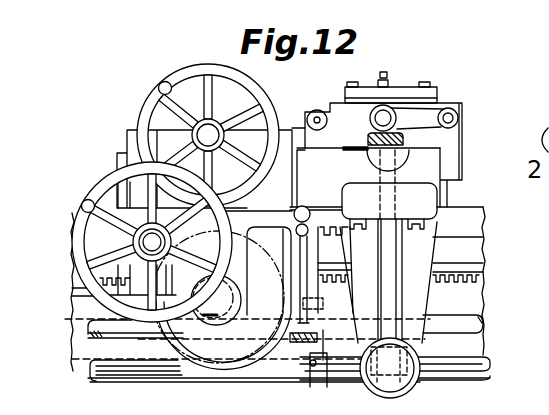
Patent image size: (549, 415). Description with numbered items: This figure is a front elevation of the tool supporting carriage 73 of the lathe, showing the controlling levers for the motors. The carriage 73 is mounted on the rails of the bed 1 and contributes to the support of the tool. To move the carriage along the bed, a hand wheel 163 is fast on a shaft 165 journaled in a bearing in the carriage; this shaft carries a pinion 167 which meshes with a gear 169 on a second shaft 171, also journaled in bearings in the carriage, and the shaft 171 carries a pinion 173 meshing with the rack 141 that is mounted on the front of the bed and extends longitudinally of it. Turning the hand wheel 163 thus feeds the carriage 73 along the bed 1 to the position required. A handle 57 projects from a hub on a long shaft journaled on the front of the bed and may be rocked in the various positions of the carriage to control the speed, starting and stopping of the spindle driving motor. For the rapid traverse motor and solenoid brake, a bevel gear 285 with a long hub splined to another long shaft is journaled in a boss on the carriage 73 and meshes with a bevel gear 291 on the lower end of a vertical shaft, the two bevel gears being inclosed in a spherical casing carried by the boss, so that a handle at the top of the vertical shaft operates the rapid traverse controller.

The bed 1 is at (481, 345).
The handle 57 is at (307, 252).
The tool supporting carriage 73 is at (433, 139).
The rack 141 is at (73, 288).
The hand wheel 163 is at (77, 224).
The shaft 165 is at (147, 243).
The pinion 167 is at (110, 264).
The gear 169 is at (150, 328).
The shaft 171 is at (92, 331).
The pinion 173 is at (105, 356).
The bevel gear 285 is at (378, 396).
The bevel gear 291 is at (422, 379).